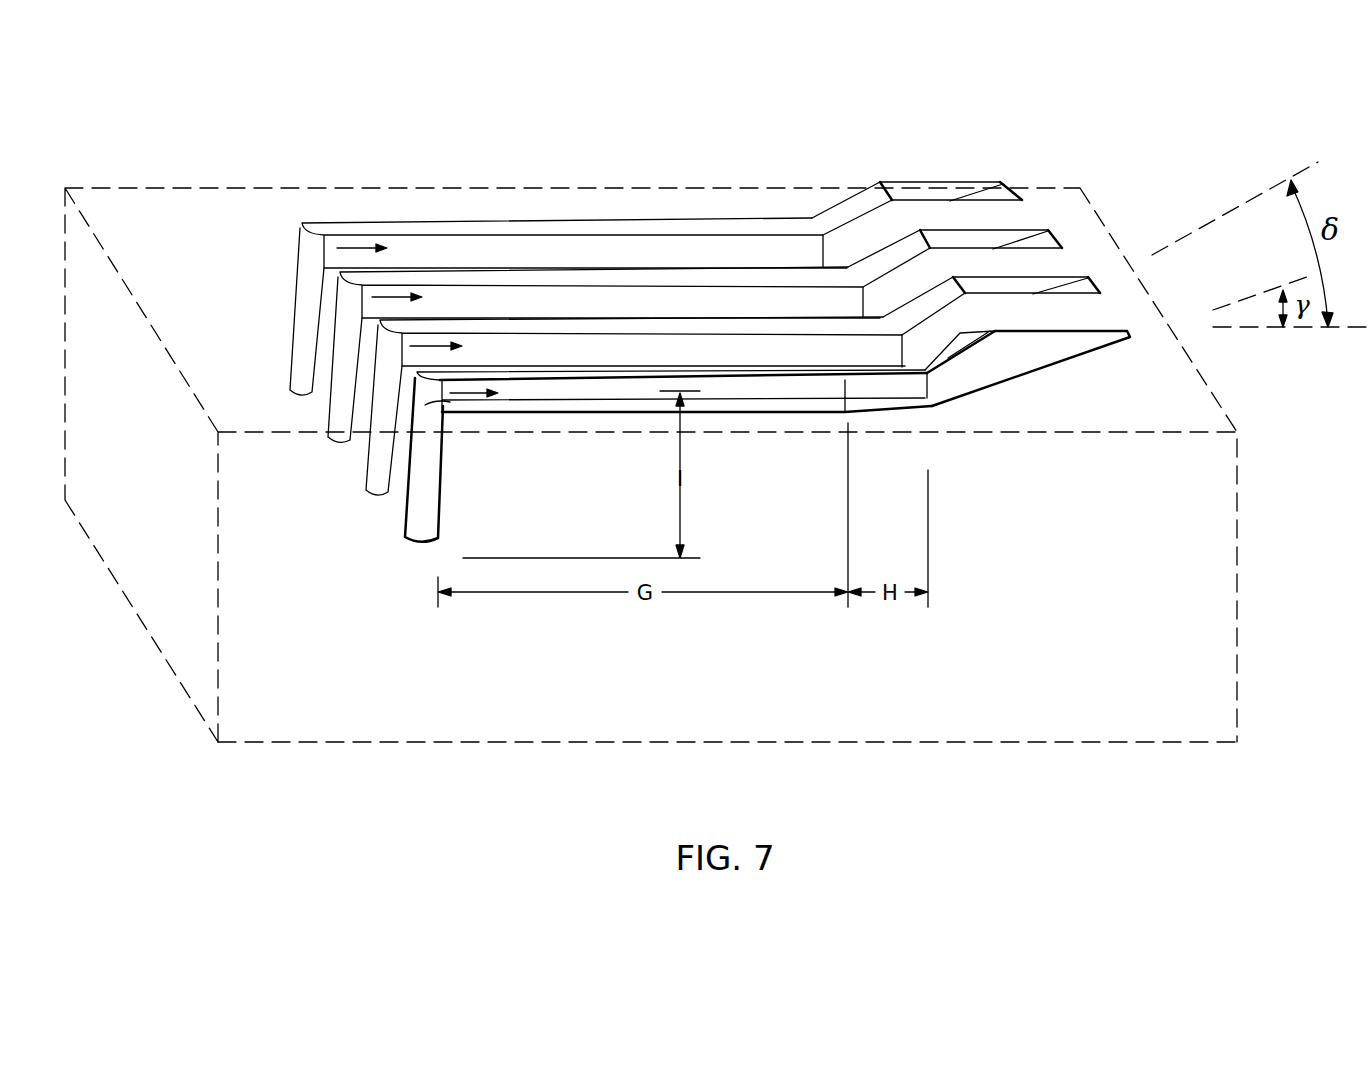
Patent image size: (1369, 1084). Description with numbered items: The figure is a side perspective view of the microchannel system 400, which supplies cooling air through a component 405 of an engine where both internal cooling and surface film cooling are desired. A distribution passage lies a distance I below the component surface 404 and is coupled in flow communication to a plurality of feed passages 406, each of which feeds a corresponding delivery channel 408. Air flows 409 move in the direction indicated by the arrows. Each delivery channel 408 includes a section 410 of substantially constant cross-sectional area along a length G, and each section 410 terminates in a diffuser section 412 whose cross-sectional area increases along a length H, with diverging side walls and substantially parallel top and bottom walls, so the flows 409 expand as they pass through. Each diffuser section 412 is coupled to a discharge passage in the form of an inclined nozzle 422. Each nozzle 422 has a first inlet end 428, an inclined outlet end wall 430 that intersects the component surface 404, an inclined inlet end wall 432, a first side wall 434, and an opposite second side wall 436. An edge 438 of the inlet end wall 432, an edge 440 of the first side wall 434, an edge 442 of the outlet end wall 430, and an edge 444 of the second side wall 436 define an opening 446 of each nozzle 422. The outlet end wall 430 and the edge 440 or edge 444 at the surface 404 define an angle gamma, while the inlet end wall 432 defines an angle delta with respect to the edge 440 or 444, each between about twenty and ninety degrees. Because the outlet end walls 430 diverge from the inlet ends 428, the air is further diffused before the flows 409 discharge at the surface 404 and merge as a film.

The microchannel system 400 is at (493, 213).
The component surface 404 is at (125, 249).
The component 405 is at (334, 741).
The feed passages 406 is at (423, 485).
The delivery channel 408 is at (413, 372).
The air flows 409 is at (363, 248).
The section 410 is at (473, 259).
The diffuser section 412 is at (863, 390).
The inclined nozzle 422 is at (1020, 335).
The first inlet end 428 is at (947, 393).
The inclined outlet end wall 430 is at (933, 405).
The inclined inlet end wall 432 is at (947, 368).
The first side wall 434 is at (958, 335).
The second side wall 436 is at (1060, 340).
The edge of inlet end wall 438 is at (1010, 332).
The edge of first side wall 440 is at (1030, 293).
The edge of outlet end wall 442 is at (1127, 331).
The edge of second side wall 444 is at (1063, 312).
The opening 446 is at (1003, 188).